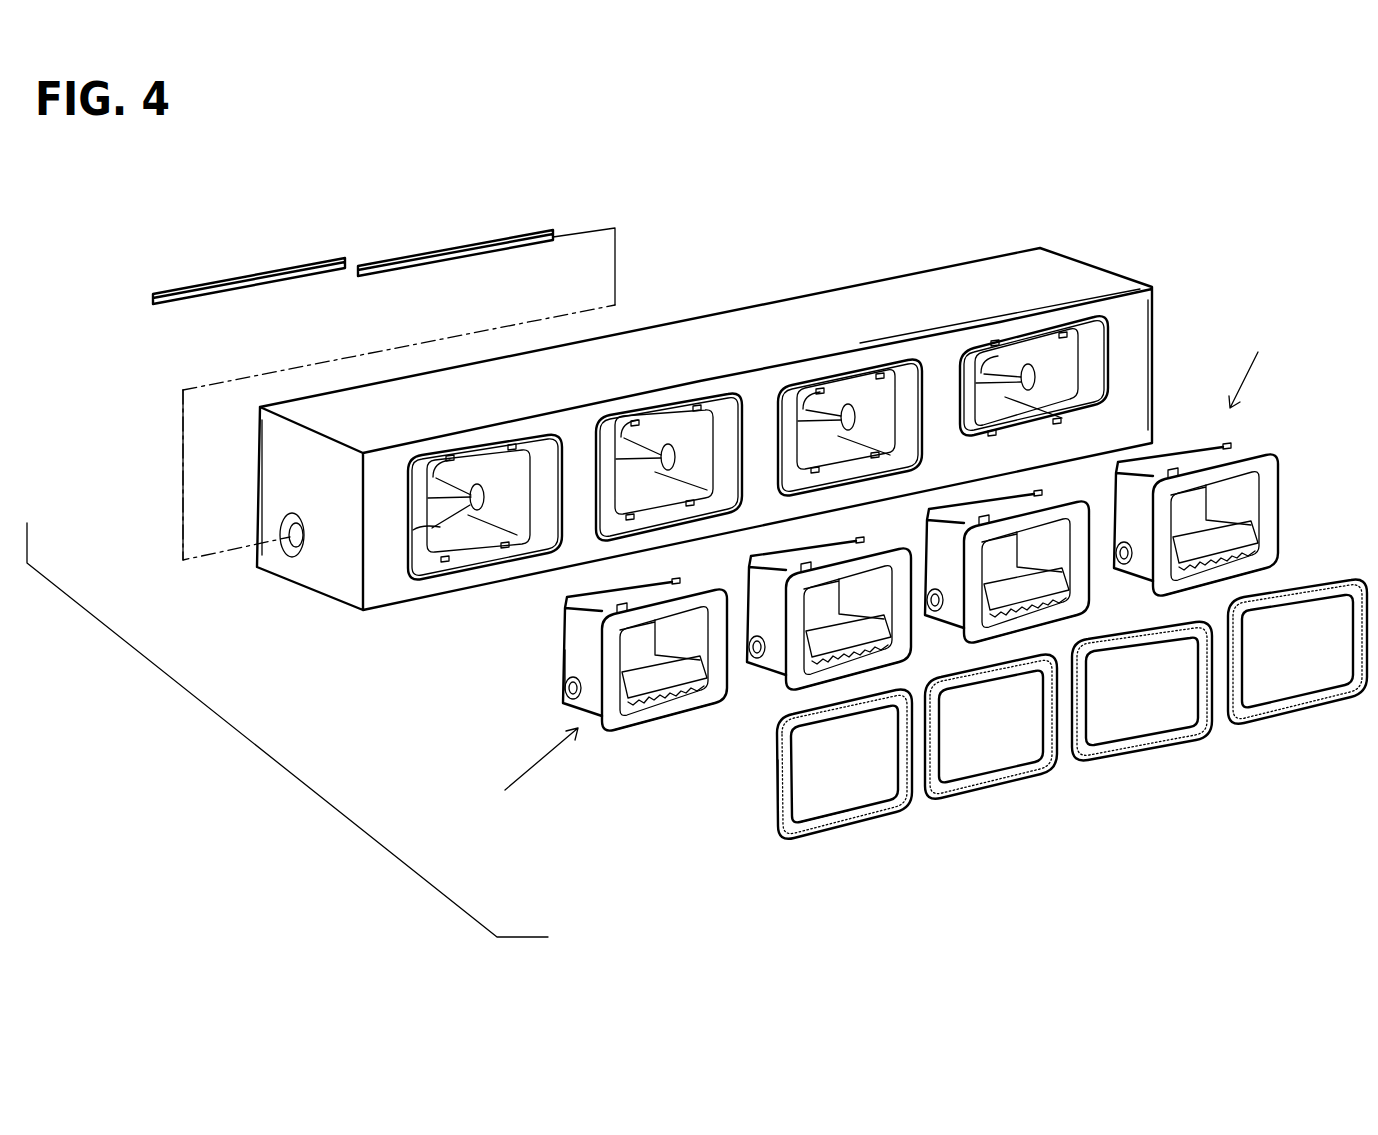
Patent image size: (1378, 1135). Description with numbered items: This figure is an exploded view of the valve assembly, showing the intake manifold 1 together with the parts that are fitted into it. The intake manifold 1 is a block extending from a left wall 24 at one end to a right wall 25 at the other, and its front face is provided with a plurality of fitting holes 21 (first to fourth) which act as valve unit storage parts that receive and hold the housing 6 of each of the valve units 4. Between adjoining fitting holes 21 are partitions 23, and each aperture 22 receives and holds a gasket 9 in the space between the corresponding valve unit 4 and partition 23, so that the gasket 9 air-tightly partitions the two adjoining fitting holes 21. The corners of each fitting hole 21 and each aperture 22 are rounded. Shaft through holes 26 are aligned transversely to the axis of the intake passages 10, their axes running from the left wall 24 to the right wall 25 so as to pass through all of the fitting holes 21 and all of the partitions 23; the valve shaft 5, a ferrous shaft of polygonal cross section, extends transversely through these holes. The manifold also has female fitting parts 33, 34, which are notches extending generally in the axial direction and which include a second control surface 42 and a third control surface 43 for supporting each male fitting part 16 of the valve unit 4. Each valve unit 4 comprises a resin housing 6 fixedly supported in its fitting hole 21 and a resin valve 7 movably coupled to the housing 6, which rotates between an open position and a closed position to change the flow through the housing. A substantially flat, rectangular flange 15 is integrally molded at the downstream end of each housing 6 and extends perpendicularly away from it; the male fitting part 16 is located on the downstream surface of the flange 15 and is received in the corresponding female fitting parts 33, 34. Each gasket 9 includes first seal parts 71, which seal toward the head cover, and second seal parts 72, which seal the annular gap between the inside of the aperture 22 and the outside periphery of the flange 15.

The intake manifold 1 is at (1040, 250).
The valve unit 4 is at (879, 568).
The valve shaft 5 is at (232, 278).
The housing 6 is at (578, 657).
The valve 7 is at (682, 676).
The gasket 9 is at (722, 897).
The intake passage 10 is at (475, 488).
The flange 15 is at (667, 725).
The male fitting part 16 is at (562, 608).
The fitting hole 21 is at (410, 548).
The aperture 22 is at (433, 528).
The partition 23 is at (583, 470).
The left wall 24 is at (270, 475).
The right wall 25 is at (1137, 335).
The shaft through hole 26 is at (428, 470).
The female fitting part 33 is at (448, 457).
The female fitting part 34 is at (447, 562).
The second control surface 42 is at (1065, 335).
The third control surface 43 is at (996, 343).
The first seal part 71 is at (818, 840).
The second seal part 72 is at (777, 795).